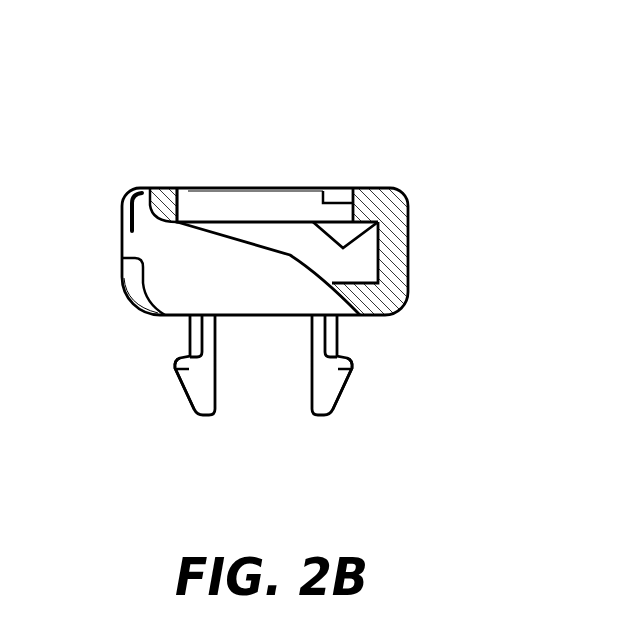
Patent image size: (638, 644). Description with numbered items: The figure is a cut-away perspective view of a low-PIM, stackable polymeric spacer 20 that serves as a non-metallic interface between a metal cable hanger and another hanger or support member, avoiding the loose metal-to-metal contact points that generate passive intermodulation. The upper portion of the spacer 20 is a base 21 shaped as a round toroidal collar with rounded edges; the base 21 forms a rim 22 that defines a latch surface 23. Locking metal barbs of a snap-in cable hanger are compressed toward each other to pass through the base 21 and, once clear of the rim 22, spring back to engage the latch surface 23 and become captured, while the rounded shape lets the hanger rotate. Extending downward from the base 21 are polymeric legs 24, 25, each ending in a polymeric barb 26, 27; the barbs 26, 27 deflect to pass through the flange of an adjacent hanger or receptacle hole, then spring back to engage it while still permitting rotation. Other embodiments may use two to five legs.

The polymeric spacer 20 is at (406, 136).
The base 21 is at (152, 221).
The rim 22 is at (323, 203).
The latch surface 23 is at (343, 248).
The polymeric leg 24 is at (158, 361).
The polymeric leg 25 is at (392, 367).
The polymeric barb 26 is at (207, 383).
The polymeric barb 27 is at (328, 378).